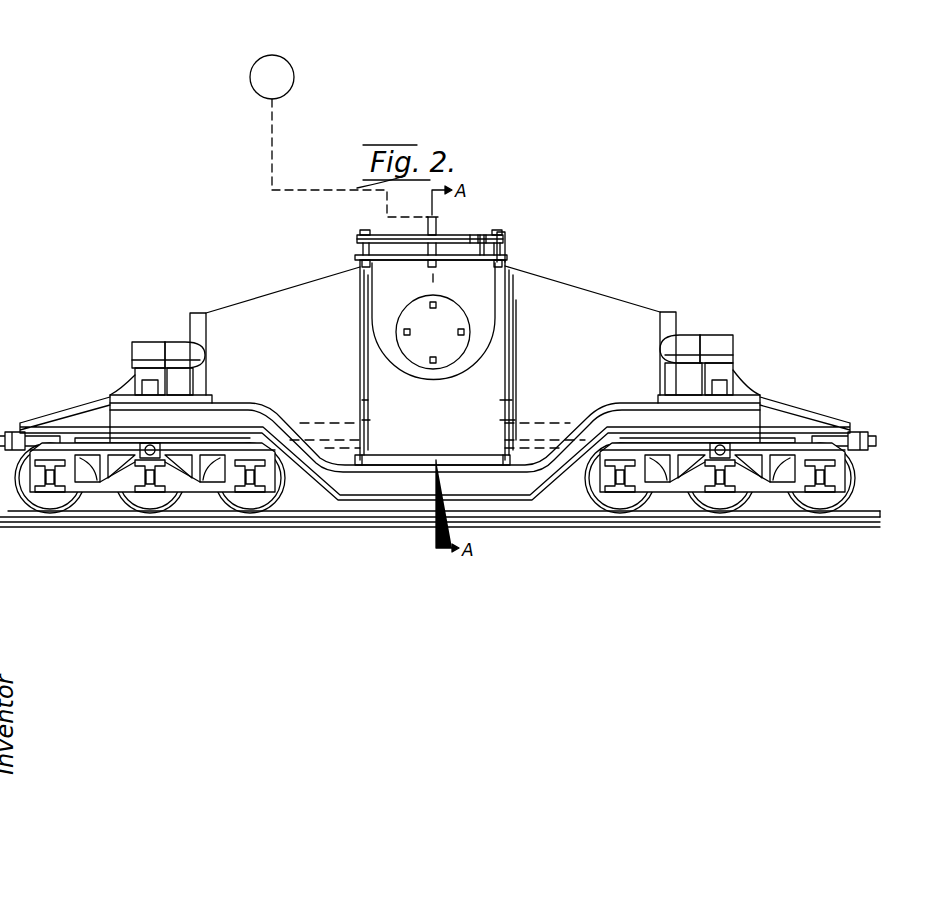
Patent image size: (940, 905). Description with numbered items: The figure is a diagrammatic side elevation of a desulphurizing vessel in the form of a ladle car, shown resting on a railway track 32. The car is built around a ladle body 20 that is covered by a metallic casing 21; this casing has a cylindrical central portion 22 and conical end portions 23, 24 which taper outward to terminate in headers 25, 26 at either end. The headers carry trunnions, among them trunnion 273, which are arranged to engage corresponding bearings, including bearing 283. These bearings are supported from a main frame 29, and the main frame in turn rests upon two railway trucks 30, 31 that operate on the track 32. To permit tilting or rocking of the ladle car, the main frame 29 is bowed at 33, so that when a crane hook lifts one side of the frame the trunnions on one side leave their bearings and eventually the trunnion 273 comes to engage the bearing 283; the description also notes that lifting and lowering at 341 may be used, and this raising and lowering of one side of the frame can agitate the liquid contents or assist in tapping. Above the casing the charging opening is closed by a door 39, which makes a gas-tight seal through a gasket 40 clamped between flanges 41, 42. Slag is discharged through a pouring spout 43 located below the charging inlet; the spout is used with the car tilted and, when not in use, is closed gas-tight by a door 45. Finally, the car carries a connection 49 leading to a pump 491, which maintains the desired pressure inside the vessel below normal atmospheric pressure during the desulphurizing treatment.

The ladle body 20 is at (393, 450).
The metallic casing 21 is at (577, 361).
The cylindrical central portion 22 is at (444, 421).
The conical end portion 23 is at (278, 300).
The conical end portion 24 is at (592, 310).
The header 25 is at (200, 318).
The header 26 is at (687, 335).
The trunnion 273 is at (160, 345).
The bearing 283 is at (145, 377).
The main frame 29 is at (236, 462).
The railway truck 30 is at (150, 508).
The railway truck 31 is at (763, 465).
The track 32 is at (562, 517).
The bowed portion of main frame 33 is at (318, 455).
The lifting point 341 is at (418, 490).
The door 39 is at (480, 235).
The gasket 40 is at (505, 240).
The flange 41 is at (358, 237).
The flange 42 is at (357, 247).
The pouring spout 43 is at (448, 343).
The door 45 is at (423, 338).
The connection 49 is at (437, 223).
The pump 491 is at (294, 77).